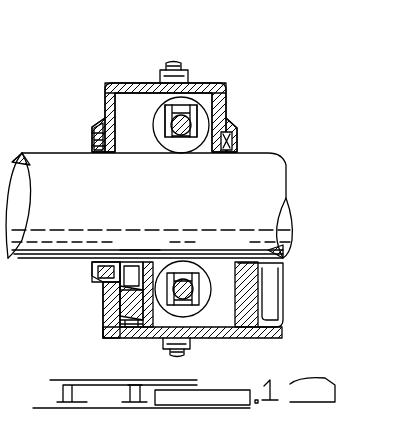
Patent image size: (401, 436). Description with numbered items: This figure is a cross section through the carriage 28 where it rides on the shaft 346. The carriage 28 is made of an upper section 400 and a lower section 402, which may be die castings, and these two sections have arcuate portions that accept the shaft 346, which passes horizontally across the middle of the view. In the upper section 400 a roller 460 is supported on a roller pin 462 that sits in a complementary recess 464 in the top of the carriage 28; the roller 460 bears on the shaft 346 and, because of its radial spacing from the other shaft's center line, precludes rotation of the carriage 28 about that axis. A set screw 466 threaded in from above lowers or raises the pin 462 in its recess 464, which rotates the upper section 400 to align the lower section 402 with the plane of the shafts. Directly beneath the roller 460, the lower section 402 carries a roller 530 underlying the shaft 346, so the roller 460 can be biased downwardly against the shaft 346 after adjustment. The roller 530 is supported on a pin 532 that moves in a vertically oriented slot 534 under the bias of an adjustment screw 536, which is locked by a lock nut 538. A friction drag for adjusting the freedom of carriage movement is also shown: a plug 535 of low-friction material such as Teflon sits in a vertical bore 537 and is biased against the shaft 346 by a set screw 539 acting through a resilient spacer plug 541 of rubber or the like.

The carriage 28 is at (104, 86).
The upper section 400 is at (100, 106).
The set screw 466 is at (178, 62).
The recess 464 is at (204, 97).
The roller 460 is at (200, 106).
The roller pin 462 is at (192, 120).
The shaft 346 is at (288, 168).
The slot 534 is at (163, 255).
The pin 532 is at (201, 262).
The plug 535 is at (100, 270).
The vertical bore 537 is at (106, 289).
The lower section 402 is at (110, 300).
The resilient spacer plug 541 is at (128, 308).
The set screw 539 is at (120, 332).
The roller 530 is at (157, 336).
The lock nut 538 is at (197, 342).
The adjustment screw 536 is at (188, 354).